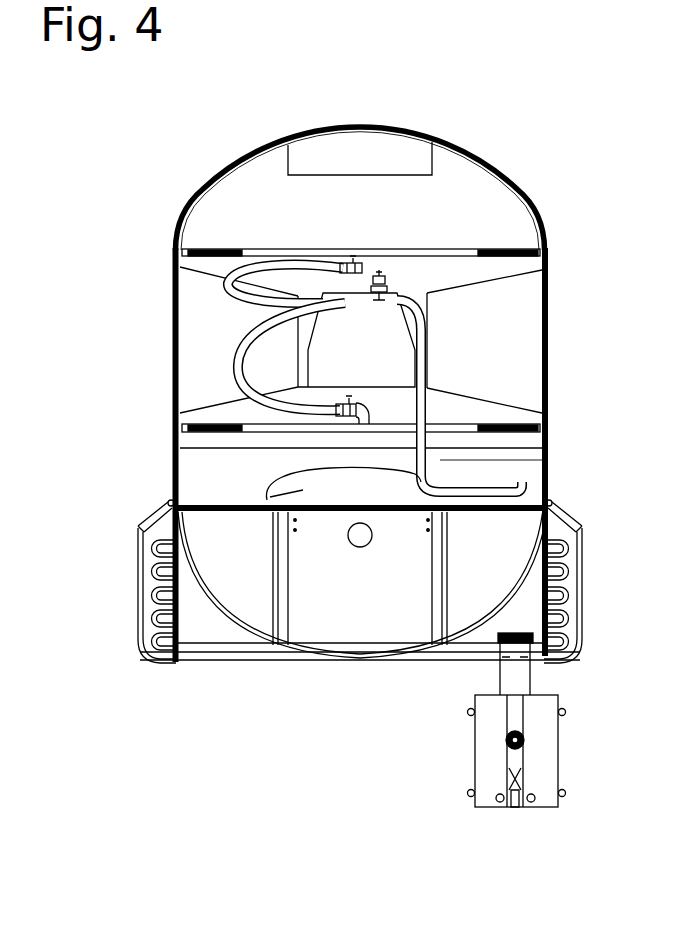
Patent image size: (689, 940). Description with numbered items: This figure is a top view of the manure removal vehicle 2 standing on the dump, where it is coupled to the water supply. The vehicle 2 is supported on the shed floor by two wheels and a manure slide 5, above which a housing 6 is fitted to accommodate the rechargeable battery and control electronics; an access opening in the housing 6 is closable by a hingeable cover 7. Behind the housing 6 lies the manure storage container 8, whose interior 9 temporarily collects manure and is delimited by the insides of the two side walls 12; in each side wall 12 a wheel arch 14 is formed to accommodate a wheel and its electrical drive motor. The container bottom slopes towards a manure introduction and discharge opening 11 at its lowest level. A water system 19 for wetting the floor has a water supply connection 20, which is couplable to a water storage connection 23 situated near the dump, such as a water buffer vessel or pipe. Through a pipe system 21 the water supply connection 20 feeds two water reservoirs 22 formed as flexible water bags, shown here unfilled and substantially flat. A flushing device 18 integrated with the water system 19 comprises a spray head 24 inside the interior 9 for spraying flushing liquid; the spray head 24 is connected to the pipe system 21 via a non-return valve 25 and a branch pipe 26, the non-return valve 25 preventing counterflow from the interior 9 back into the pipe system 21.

The manure removal vehicle 2 is at (379, 113).
The manure slide 5 is at (168, 604).
The housing 6 is at (360, 600).
The hingeable cover 7 is at (237, 592).
The manure storage container 8 is at (262, 173).
The interior 9 is at (255, 225).
The manure introduction and discharge opening 11 is at (267, 497).
The side wall 12 is at (172, 303).
The wheel arch 14 is at (207, 357).
The flushing device 18 is at (380, 283).
The water system 19 is at (440, 460).
The water supply connection 20 is at (527, 633).
The pipe system 21 is at (428, 405).
The water reservoir 22 is at (550, 282).
The water storage connection 23 is at (512, 668).
The spray head 24 is at (379, 272).
The non-return valve 25 is at (290, 268).
The branch pipe 26 is at (240, 331).